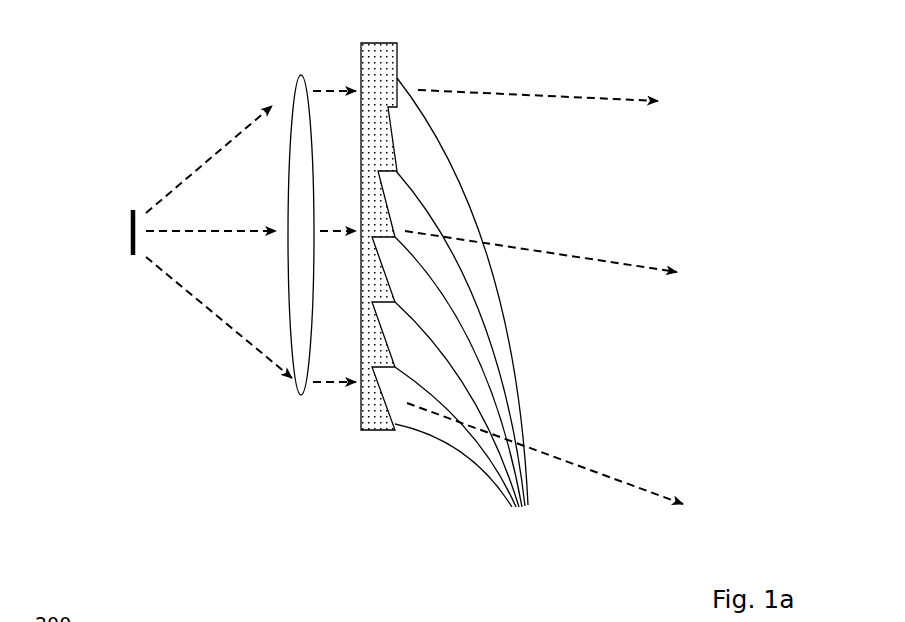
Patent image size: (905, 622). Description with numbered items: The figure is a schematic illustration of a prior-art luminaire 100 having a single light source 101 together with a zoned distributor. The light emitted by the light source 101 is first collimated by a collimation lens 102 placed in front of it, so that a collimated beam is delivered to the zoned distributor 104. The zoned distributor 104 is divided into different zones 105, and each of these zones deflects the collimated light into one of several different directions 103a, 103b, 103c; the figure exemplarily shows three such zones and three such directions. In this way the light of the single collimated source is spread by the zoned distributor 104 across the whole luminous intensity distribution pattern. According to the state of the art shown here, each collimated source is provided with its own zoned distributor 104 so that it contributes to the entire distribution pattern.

The luminaire 100 is at (99, 147).
The light source 101 is at (131, 238).
The collimation lens 102 is at (297, 333).
The first direction 103a is at (569, 101).
The second direction 103b is at (570, 258).
The third direction 103c is at (573, 462).
The zoned distributor 104 is at (377, 58).
The zones 105 is at (464, 307).